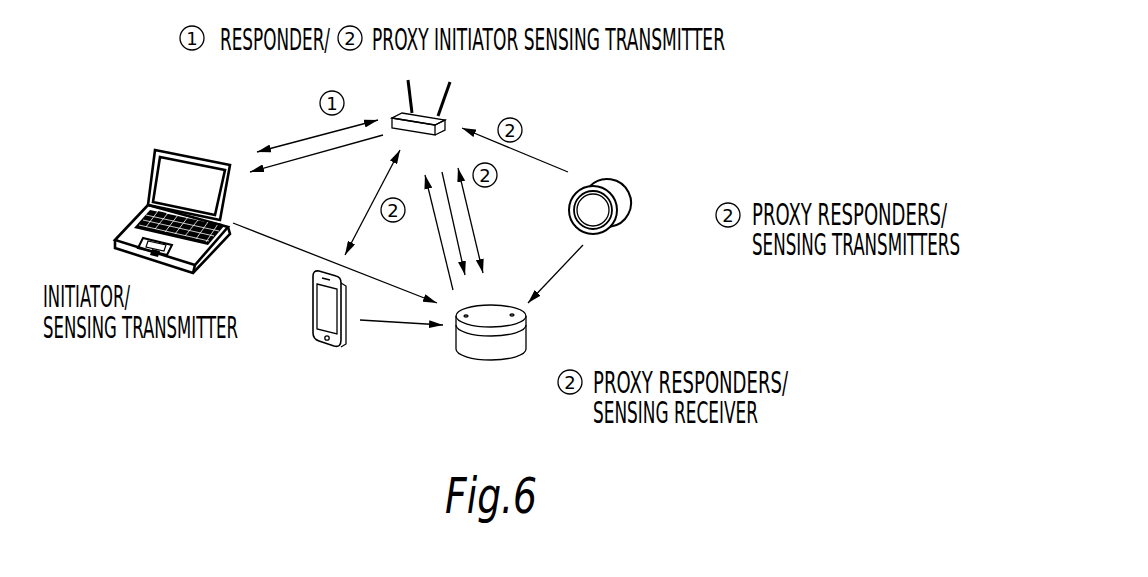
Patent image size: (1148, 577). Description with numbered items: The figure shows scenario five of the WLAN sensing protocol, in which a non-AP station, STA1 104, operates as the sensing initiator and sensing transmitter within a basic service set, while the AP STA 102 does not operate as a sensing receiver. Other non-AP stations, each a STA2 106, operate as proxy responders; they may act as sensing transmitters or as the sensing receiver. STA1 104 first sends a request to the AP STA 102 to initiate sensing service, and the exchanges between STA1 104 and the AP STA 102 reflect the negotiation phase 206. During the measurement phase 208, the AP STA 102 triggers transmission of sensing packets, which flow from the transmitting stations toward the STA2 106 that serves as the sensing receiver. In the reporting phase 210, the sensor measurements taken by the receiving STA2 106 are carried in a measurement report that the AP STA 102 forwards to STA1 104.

The AP STA 102 is at (443, 117).
The STA1 104 is at (115, 243).
The STA2 106 is at (313, 298).
The negotiation phase 206 is at (318, 136).
The measurement phase 208 is at (294, 247).
The reporting phase 210 is at (285, 164).